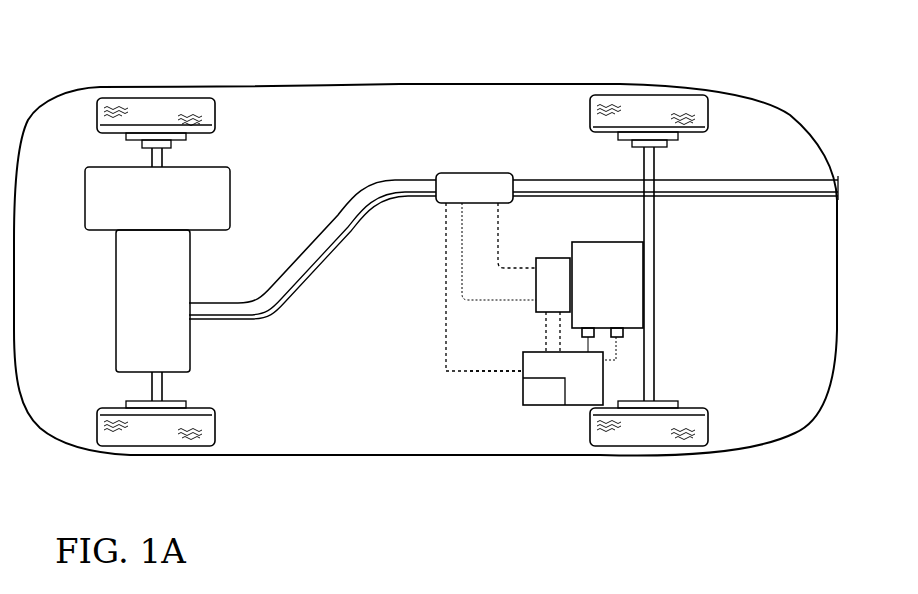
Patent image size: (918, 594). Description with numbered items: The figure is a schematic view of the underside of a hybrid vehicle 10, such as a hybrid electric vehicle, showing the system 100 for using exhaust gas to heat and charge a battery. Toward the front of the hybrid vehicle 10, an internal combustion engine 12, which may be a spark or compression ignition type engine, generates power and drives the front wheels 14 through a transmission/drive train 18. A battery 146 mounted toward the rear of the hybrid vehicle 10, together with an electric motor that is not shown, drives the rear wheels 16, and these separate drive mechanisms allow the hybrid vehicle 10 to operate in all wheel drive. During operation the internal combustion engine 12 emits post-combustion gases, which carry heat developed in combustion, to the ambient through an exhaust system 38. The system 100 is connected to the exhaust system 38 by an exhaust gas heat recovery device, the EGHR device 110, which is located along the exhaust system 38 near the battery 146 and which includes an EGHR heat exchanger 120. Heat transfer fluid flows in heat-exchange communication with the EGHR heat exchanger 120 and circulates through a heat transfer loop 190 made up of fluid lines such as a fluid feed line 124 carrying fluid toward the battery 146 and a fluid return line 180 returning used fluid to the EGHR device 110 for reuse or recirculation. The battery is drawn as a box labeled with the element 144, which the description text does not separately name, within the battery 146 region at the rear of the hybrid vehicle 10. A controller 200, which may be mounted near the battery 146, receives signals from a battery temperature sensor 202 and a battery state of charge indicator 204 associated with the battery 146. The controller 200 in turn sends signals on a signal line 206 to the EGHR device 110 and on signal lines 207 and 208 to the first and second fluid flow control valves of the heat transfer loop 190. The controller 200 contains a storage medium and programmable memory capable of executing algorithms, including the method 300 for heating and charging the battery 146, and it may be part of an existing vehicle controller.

The hybrid vehicle 10 is at (473, 62).
The internal combustion engine 12 is at (153, 301).
The front wheels 14 is at (154, 110).
The rear wheels 16 is at (650, 110).
The transmission/drive train 18 is at (157, 198).
The exhaust system 38 is at (836, 200).
The system for heating and charging a battery 100 is at (533, 305).
The EGHR device 110 is at (513, 211).
The EGHR heat exchanger 120 is at (511, 202).
The fluid feed line 124 is at (446, 243).
The fuel tank 144 is at (607, 285).
The battery 146 is at (607, 265).
The fluid return line 180 is at (499, 245).
The heat transfer loop 190 is at (520, 284).
The controller 200 is at (563, 378).
The battery temperature sensor 202 is at (591, 327).
The battery state of charge indicator 204 is at (622, 334).
The signal line 206 is at (470, 372).
The signal line 207 is at (546, 326).
The signal line 208 is at (546, 339).
The method 300 is at (544, 391).